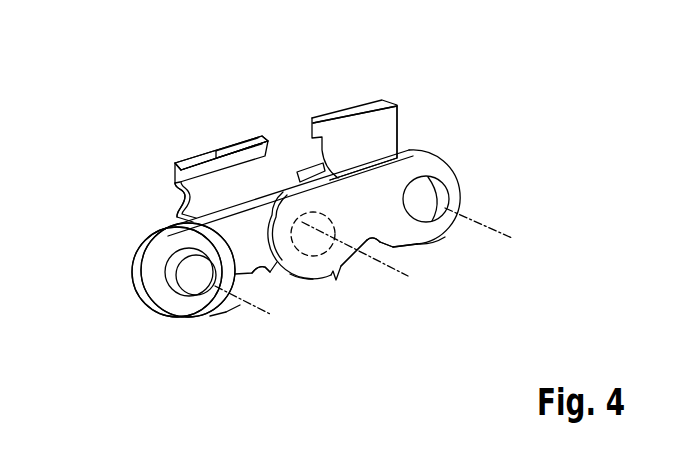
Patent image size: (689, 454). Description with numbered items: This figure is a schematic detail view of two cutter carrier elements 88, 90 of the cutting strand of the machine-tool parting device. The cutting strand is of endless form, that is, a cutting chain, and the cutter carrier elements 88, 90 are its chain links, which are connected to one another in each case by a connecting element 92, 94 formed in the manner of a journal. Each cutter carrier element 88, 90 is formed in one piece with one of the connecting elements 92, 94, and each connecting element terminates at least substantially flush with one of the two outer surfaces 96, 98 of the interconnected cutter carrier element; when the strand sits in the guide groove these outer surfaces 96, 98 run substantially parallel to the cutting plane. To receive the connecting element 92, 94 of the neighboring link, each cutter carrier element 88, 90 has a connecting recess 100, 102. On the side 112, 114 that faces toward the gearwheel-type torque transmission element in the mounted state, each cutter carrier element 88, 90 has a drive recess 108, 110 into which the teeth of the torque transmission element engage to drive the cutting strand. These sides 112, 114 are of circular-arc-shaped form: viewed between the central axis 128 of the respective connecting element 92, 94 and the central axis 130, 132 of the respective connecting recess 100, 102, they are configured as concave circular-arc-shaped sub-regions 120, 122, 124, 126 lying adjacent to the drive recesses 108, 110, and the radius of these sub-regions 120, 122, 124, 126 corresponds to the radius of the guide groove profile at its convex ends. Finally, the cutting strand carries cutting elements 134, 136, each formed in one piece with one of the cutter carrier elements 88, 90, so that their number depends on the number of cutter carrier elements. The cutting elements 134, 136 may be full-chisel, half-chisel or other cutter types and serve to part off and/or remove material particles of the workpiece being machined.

The cutter carrier element 88 is at (160, 252).
The cutter carrier element 90 is at (427, 164).
The connecting element 92 is at (190, 286).
The connecting element 94 is at (253, 170).
The outer surface 96 is at (361, 206).
The outer surface 98 is at (130, 270).
The connecting recess 100 is at (359, 268).
The connecting recess 102 is at (443, 198).
The drive recess 108 is at (268, 273).
The drive recess 110 is at (407, 273).
The side 112 is at (218, 320).
The side 114 is at (430, 264).
The sub-region 120 is at (231, 320).
The sub-region 122 is at (299, 300).
The sub-region 124 is at (377, 250).
The sub-region 126 is at (440, 251).
The central axis 128 is at (130, 250).
The central axis 130 is at (158, 163).
The central axis 132 is at (335, 157).
The cutting element 134 is at (196, 160).
The cutting element 136 is at (328, 118).